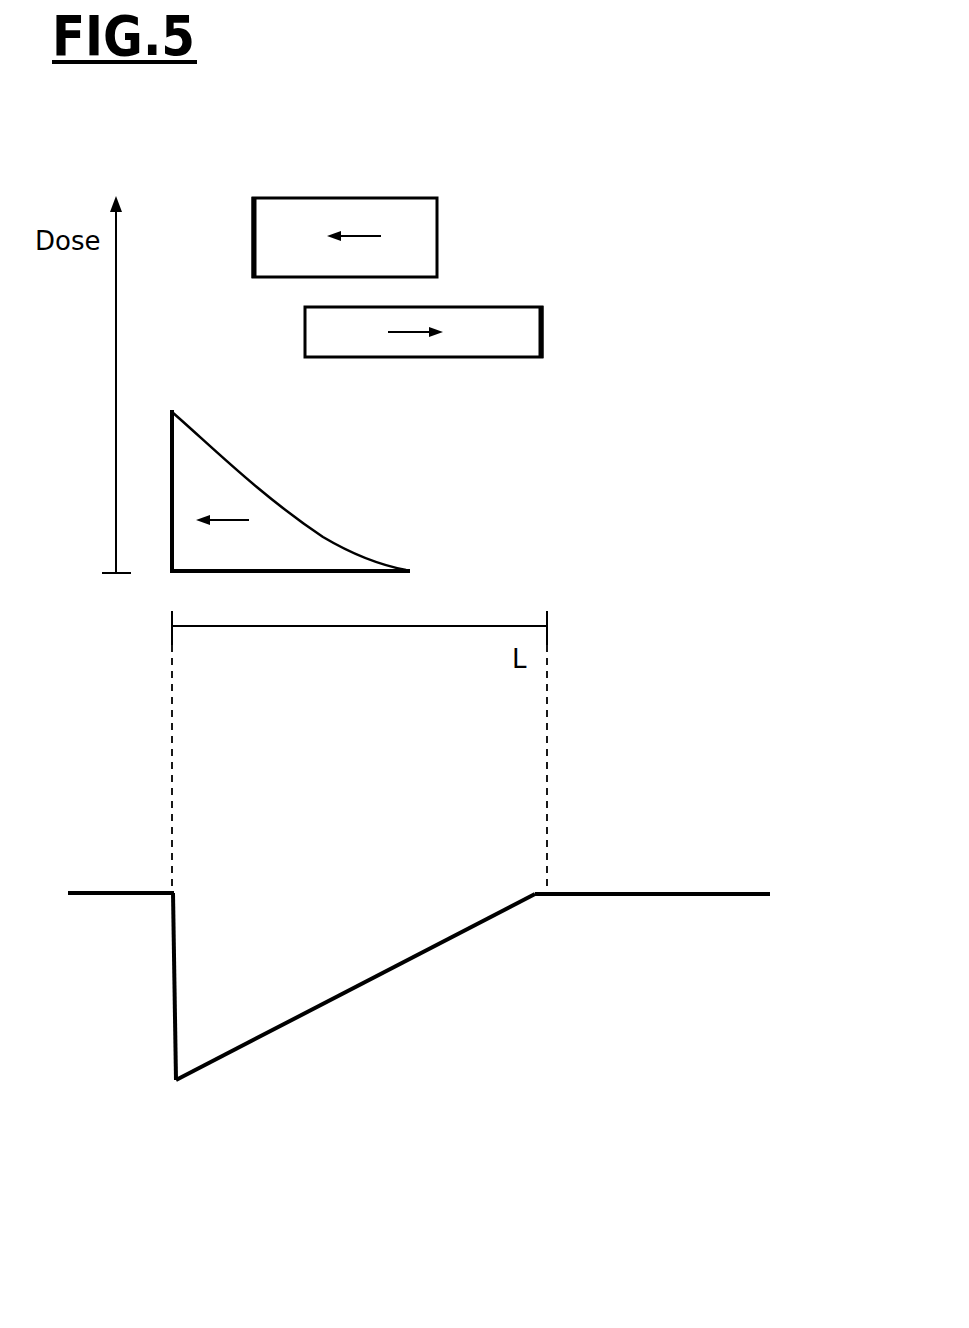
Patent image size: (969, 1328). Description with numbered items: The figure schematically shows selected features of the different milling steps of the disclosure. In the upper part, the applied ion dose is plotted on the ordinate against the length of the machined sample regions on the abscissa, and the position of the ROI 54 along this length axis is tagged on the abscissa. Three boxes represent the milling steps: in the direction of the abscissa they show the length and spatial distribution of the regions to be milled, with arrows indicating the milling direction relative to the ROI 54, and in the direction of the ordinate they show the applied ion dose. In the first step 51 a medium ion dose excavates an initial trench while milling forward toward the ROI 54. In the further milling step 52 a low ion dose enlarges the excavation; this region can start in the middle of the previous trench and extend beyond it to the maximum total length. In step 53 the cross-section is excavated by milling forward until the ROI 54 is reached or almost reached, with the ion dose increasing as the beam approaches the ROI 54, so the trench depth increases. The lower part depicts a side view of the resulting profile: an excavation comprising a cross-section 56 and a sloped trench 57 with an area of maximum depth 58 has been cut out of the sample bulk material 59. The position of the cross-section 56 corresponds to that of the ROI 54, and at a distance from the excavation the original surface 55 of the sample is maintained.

The first milling step 51 is at (423, 224).
The further milling step 52 is at (532, 330).
The cross-section milling step 53 is at (206, 455).
The ROI 54 is at (170, 633).
The original surface 55 is at (118, 890).
The cross-section 56 is at (174, 962).
The sloped trench 57 is at (348, 990).
The area of maximum depth 58 is at (175, 1080).
The sample bulk material 59 is at (128, 968).